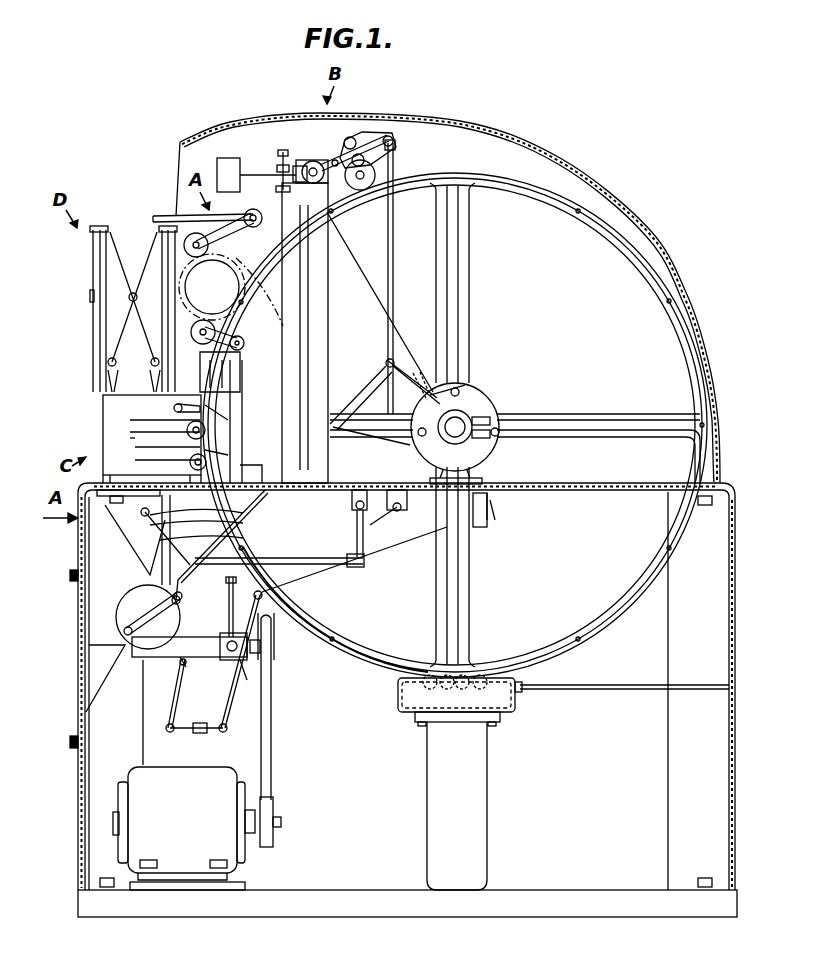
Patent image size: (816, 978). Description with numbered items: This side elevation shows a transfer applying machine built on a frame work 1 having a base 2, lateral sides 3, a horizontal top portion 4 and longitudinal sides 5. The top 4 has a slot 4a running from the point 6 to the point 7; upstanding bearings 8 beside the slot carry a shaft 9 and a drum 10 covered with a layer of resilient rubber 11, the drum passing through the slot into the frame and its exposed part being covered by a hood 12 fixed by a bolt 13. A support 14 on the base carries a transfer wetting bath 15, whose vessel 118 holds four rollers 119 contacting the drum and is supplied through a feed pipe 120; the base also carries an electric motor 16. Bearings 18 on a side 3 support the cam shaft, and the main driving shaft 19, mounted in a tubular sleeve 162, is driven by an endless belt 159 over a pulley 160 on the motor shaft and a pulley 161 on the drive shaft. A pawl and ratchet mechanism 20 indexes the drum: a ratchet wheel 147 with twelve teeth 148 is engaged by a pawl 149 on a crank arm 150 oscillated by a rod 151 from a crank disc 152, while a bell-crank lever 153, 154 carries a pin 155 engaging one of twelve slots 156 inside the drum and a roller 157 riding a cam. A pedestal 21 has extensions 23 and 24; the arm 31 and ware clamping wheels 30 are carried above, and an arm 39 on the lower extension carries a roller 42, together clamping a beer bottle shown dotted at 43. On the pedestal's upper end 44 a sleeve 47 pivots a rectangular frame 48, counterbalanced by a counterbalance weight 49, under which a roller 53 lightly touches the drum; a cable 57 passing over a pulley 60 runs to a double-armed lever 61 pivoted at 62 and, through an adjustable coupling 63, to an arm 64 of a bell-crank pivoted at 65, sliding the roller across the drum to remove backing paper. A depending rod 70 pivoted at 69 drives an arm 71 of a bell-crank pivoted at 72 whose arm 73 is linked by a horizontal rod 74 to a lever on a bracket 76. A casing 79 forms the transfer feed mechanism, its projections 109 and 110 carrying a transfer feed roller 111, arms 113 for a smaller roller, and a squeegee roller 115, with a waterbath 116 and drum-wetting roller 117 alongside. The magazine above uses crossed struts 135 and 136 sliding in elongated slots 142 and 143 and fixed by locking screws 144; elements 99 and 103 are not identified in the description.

The frame work 1 is at (704, 925).
The base 2 is at (380, 900).
The lateral sides 3 is at (89, 760).
The horizontal top portion 4 is at (489, 494).
The slot 4a is at (681, 484).
The longitudinal sides 5 is at (664, 890).
The point 6 is at (688, 432).
The point 7 is at (242, 472).
The upstanding bearings 8 is at (494, 455).
The shaft 9 is at (460, 420).
The drum 10 is at (681, 354).
The layer of resilient rubber 11 is at (676, 549).
The hood 12 is at (675, 272).
The bolt 13 is at (714, 510).
The support 14 is at (476, 806).
The transfer wetting bath 15 is at (397, 718).
The electric motor 16 is at (195, 866).
The bearings 18 is at (114, 705).
The main driving shaft 19 is at (249, 648).
The pawl and ratchet mechanism 20 is at (490, 383).
The pedestal 21 is at (319, 273).
The upper extension 23 is at (254, 209).
The lower extension 24 is at (246, 346).
The ware clamping wheels 30 is at (226, 239).
The arm 31 is at (192, 217).
The arm 39 is at (265, 334).
The roller 42 is at (212, 287).
The beer bottle 43 is at (234, 276).
The upper end of pedestal 44 is at (313, 161).
The sleeve 47 is at (300, 165).
The rectangular frame 48 is at (367, 138).
The counterbalance weight 49 is at (226, 156).
The roller 53 is at (384, 170).
The cable 57 is at (341, 238).
The pulley 60 is at (488, 525).
The double-armed lever 61 is at (242, 678).
The pivot 62 is at (234, 690).
The adjustable coupling 63 is at (200, 733).
The arm of bell-crank lever 64 is at (170, 700).
The pivot 65 is at (180, 667).
The pivot 69 is at (392, 148).
The depending rod 70 is at (394, 266).
The arm of bell-crank lever 71 is at (393, 511).
The pivot bracket 72 is at (356, 506).
The arm of bell-crank lever 73 is at (354, 539).
The horizontal rod 74 is at (330, 566).
The bracket 76 is at (243, 514).
The casing 79 is at (140, 438).
The pivot 99 is at (140, 514).
The lever 103 is at (150, 537).
The upper boss-like projections 109 is at (130, 427).
The lower boss-like projections 110 is at (135, 460).
The transfer feed roller 111 is at (215, 412).
The arms 113 is at (174, 408).
The squeegee roller 115 is at (215, 440).
The waterbath 116 is at (204, 380).
The drum-wetting roller 117 is at (210, 356).
The vessel 118 is at (398, 692).
The rollers 119 is at (480, 675).
The feed pipe 120 is at (682, 684).
The strut 135 is at (118, 252).
The strut 136 is at (152, 243).
The elongated slot 142 is at (150, 364).
The elongated slot 143 is at (110, 369).
The locking screws 144 is at (92, 300).
The ratchet wheel 147 is at (486, 420).
The teeth 148 is at (455, 385).
The pawl 149 is at (417, 372).
The crank arm 150 is at (412, 447).
The rod 151 is at (372, 390).
The crank disc 152 is at (126, 608).
The arm of locking lever 153 is at (243, 525).
The arm of locking lever 154 is at (243, 540).
The pin 155 is at (240, 567).
The slots 156 is at (344, 643).
The roller 157 is at (180, 604).
The endless belt 159 is at (272, 740).
The pulley 160 is at (275, 806).
The pulley 161 is at (273, 660).
The tubular sleeve 162 is at (206, 657).